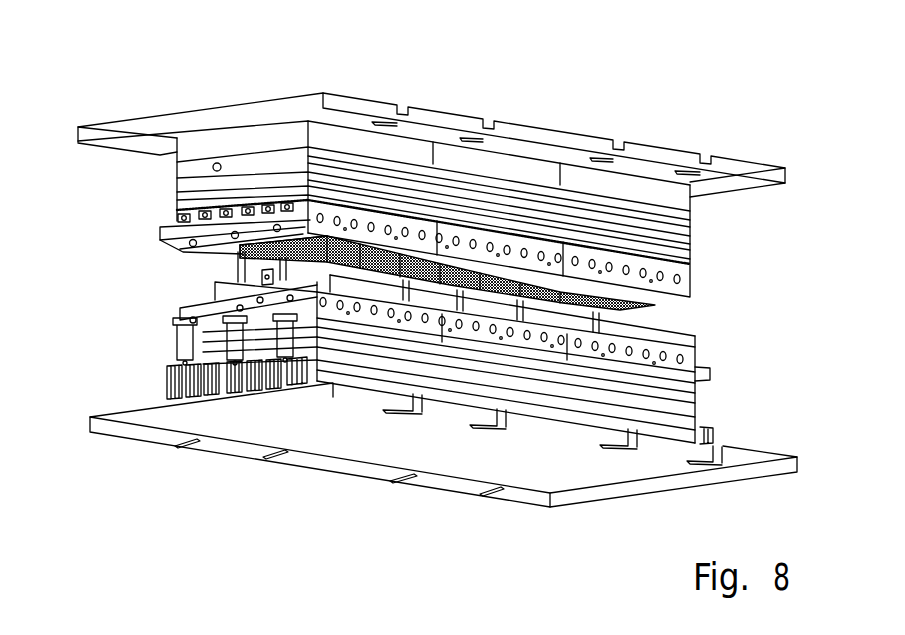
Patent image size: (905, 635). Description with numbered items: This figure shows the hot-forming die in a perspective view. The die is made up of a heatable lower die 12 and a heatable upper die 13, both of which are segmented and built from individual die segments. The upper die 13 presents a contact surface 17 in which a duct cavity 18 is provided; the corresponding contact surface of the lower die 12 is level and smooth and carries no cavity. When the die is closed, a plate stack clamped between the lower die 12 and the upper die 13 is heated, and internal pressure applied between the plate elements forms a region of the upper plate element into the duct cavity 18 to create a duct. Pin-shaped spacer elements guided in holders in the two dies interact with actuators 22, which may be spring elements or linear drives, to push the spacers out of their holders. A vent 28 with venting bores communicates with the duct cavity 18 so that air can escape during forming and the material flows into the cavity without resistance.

The lower die 12 is at (710, 392).
The upper die 13 is at (700, 237).
The contact surface 17 is at (653, 300).
The duct cavity 18 is at (240, 255).
The actuators 22 is at (171, 343).
The vent 28 is at (294, 249).